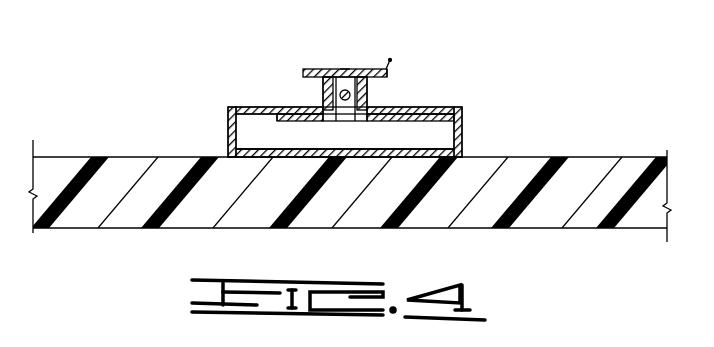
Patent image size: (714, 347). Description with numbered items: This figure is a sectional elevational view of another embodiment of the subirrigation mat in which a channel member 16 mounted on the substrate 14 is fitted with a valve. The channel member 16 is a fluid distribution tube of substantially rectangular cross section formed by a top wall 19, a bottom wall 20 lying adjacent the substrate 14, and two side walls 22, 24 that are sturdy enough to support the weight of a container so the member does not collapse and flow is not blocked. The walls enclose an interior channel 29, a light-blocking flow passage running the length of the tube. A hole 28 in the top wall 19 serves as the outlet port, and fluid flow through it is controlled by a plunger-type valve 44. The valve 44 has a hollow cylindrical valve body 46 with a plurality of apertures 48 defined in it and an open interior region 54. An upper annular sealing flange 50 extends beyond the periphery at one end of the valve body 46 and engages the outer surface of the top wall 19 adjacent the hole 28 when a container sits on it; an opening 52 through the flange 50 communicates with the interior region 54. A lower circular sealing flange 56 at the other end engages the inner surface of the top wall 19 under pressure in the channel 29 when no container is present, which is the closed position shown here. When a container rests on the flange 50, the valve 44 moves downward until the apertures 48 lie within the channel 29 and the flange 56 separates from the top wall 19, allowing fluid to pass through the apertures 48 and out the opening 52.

The substrate 14 is at (592, 178).
The channel member 16 is at (468, 144).
The top wall 19 is at (450, 110).
The bottom wall 20 is at (400, 147).
The side wall 22 is at (228, 119).
The side wall 24 is at (462, 121).
The hole 28 is at (368, 108).
The interior channel 29 is at (438, 132).
The plunger-type valve 44 is at (392, 58).
The hollow cylindrical valve body 46 is at (386, 76).
The aperture 48 is at (340, 70).
The upper annular sealing flange 50 is at (363, 70).
The opening 52 is at (347, 90).
The open interior region 54 is at (325, 82).
The lower circular sealing flange 56 is at (318, 120).